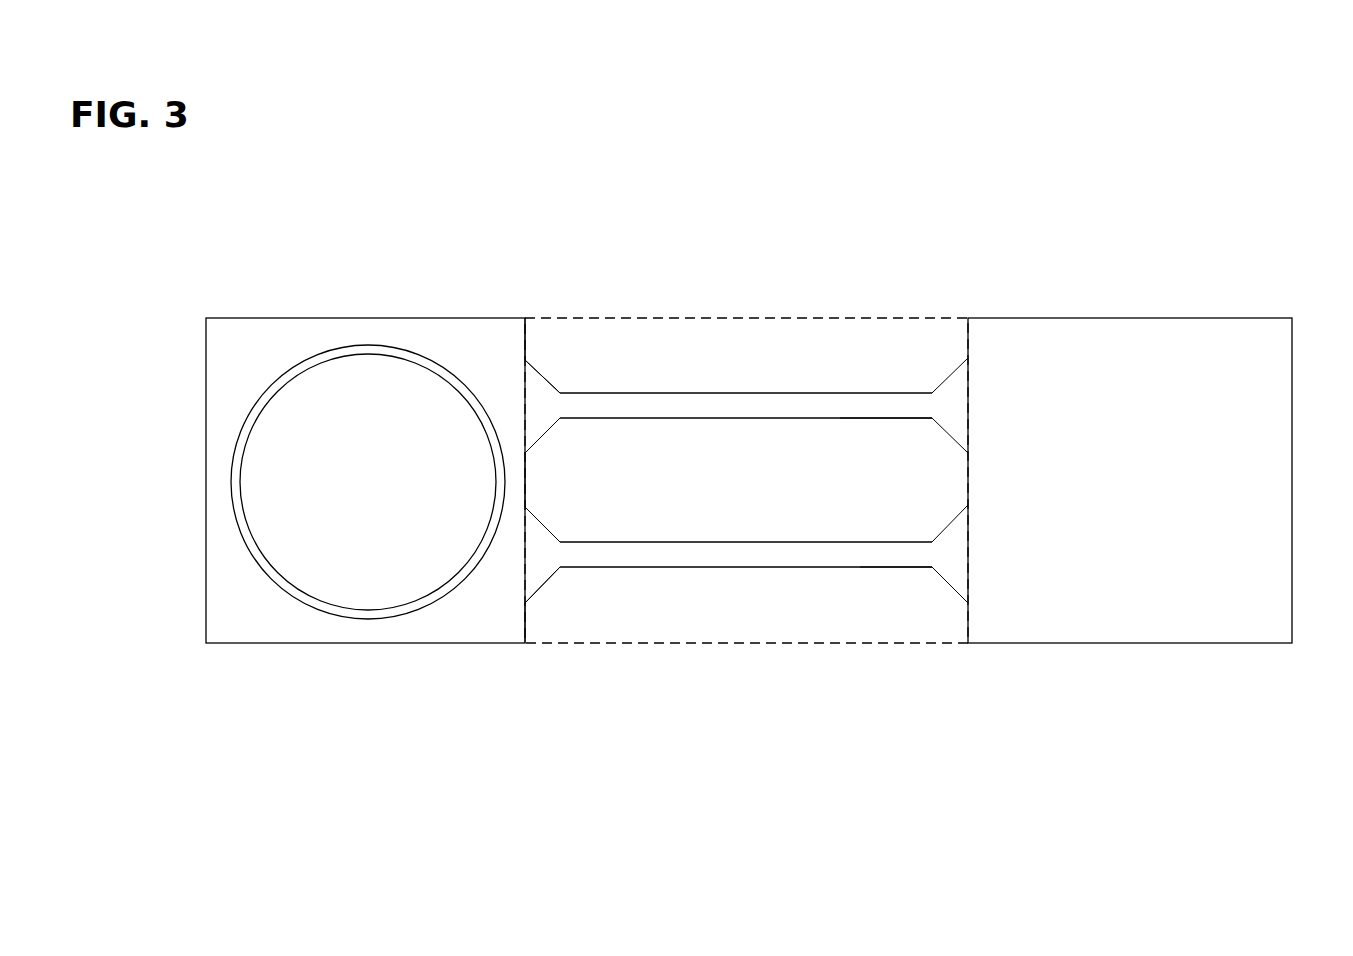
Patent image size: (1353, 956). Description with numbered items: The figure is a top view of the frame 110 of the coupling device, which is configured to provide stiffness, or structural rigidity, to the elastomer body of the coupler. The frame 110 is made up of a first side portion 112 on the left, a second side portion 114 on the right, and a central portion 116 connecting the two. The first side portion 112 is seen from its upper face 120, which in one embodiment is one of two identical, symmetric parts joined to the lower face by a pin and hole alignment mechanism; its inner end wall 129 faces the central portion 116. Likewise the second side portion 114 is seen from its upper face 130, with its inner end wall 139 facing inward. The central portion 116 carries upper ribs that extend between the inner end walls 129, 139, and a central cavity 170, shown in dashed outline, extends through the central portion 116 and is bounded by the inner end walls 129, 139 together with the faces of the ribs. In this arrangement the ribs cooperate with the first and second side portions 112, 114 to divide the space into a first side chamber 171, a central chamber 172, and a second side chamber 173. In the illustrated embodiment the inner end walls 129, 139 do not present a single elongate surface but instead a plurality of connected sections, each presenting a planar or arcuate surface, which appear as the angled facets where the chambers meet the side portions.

The frame 110 is at (1137, 318).
The first side portion 112 is at (247, 360).
The second side portion 114 is at (1240, 390).
The central portion 116 is at (643, 410).
The upper face 120 is at (385, 484).
The inner end wall 129 is at (535, 447).
The upper face 130 is at (1178, 478).
The inner end wall 139 is at (952, 435).
The central cavity 170 is at (913, 318).
The first side chamber 171 is at (758, 615).
The central chamber 172 is at (768, 500).
The second side chamber 173 is at (768, 368).